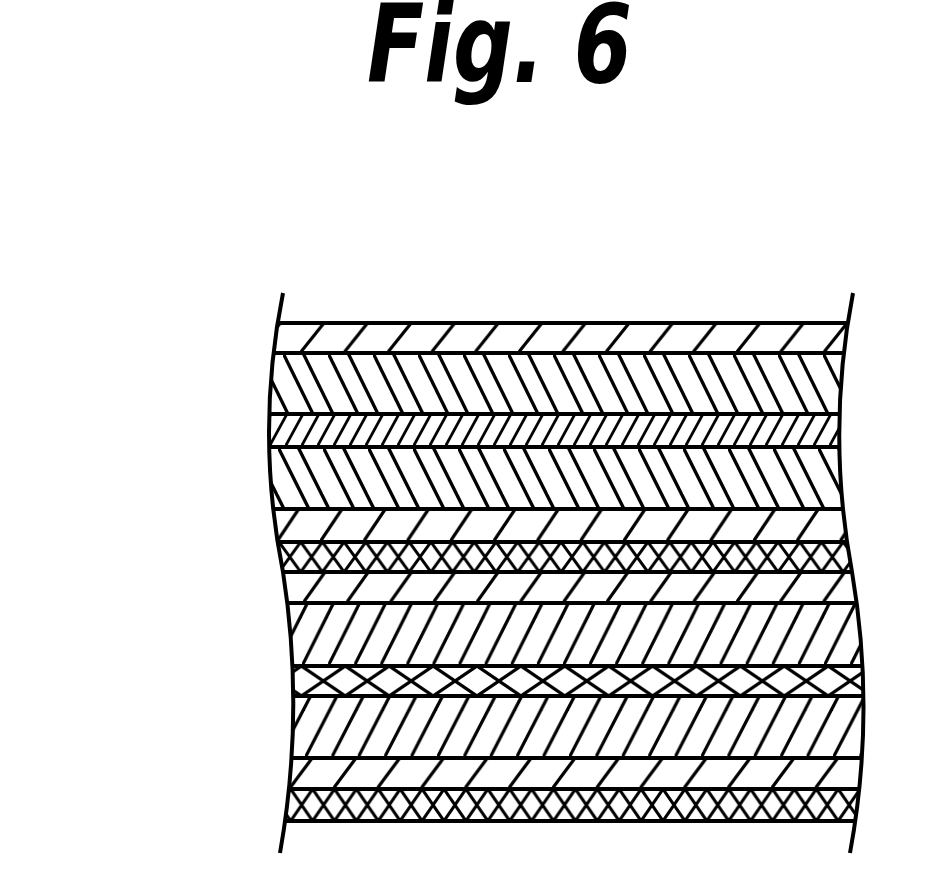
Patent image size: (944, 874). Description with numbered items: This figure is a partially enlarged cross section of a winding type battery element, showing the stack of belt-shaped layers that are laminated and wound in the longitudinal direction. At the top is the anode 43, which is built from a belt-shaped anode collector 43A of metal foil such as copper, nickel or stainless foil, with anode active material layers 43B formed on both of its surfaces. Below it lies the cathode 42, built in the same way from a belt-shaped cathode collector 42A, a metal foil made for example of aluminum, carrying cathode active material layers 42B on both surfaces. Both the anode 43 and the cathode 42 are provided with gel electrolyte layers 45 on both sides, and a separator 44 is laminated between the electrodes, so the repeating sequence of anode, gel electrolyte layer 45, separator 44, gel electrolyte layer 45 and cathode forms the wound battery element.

The cathode 42 is at (128, 640).
The cathode collector 42A is at (305, 678).
The cathode active material layers 42B is at (305, 632).
The anode 43 is at (128, 382).
The anode collector 43A is at (273, 430).
The anode active material layers 43B is at (278, 380).
The separator 44 is at (285, 554).
The gel electrolyte layers 45 is at (290, 336).